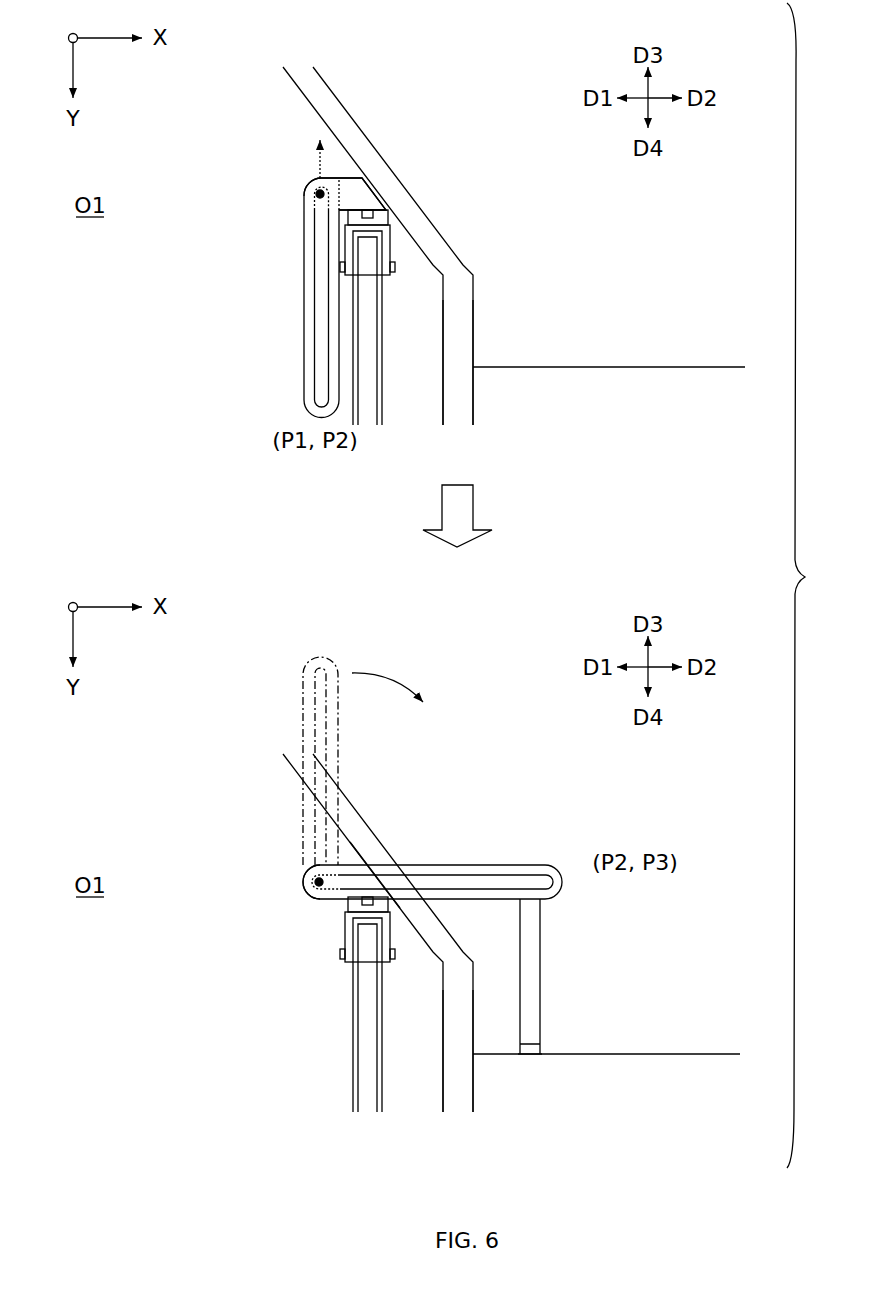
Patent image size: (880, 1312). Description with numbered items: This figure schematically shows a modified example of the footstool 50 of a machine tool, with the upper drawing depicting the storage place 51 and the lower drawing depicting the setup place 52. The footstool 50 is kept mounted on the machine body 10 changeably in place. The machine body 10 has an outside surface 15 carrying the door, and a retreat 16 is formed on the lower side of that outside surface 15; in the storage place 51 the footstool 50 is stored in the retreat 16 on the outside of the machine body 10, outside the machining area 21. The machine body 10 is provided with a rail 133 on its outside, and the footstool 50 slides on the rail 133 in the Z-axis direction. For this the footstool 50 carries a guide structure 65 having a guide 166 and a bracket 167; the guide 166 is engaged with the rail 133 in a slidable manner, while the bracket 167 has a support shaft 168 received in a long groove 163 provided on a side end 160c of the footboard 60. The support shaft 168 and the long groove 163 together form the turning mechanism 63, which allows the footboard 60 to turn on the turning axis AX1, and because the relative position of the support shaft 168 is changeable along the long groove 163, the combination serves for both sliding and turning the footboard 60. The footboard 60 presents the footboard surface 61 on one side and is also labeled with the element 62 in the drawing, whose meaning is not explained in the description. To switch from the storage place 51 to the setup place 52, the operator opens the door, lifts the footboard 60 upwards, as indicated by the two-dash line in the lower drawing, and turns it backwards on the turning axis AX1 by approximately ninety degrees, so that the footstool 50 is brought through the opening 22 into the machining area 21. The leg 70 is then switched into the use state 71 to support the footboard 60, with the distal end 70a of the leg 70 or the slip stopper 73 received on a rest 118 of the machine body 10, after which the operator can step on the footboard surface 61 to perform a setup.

The machine body 10 is at (660, 394).
The outside surface 15 is at (314, 589).
The retreat 16 is at (303, 93).
The machining area 21 is at (703, 262).
The opening 22 is at (383, 867).
The footstool 50 is at (430, 586).
The storage place 51 is at (430, 586).
The setup place 52 is at (430, 586).
The footboard 60 is at (430, 586).
The footboard surface 61 is at (430, 586).
The arm lower surface 62 is at (302, 330).
The turning mechanism 63 is at (334, 533).
The guide structure 65 is at (384, 218).
The leg 70 is at (611, 1022).
The use state 71 is at (611, 1022).
The distal end 70a is at (611, 1022).
The slip stopper 73 is at (542, 957).
The rest 118 is at (542, 1052).
The rail 133 is at (388, 238).
The side end 160c is at (430, 586).
The long groove 163 is at (318, 267).
The guide 166 is at (390, 278).
The bracket 167 is at (334, 533).
The support shaft 168 is at (334, 533).
The turning axis AX1 is at (300, 206).